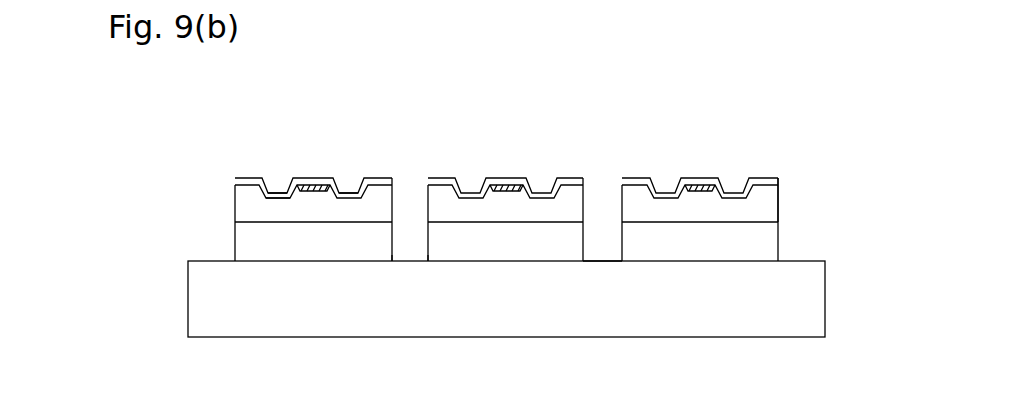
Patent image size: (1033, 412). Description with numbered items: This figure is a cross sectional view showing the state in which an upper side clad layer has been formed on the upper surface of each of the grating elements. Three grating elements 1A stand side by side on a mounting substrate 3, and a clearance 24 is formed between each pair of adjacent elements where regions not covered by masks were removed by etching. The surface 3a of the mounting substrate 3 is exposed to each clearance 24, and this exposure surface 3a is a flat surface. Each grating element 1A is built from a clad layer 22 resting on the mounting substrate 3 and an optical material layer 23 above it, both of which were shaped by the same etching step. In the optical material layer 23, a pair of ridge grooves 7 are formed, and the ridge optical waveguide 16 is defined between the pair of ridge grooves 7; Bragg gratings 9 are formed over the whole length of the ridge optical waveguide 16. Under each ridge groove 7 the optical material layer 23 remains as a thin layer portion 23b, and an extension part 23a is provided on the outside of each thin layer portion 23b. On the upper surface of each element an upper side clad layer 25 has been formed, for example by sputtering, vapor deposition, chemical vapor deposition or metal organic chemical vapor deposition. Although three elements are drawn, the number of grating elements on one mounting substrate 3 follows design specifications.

The grating element 1A is at (782, 177).
The mounting substrate 3 is at (807, 302).
The exposure surface of the mounting substrate 3a is at (598, 261).
The ridge groove 7 is at (281, 190).
The Bragg grating 9 is at (511, 192).
The ridge optical waveguide 16 is at (507, 190).
The clad layer 22 is at (767, 242).
The optical material layer 23 is at (526, 162).
The extension part 23a is at (249, 183).
The thin layer portion 23b is at (273, 202).
The clearance 24 is at (407, 173).
The upper side clad layer 25 is at (316, 178).